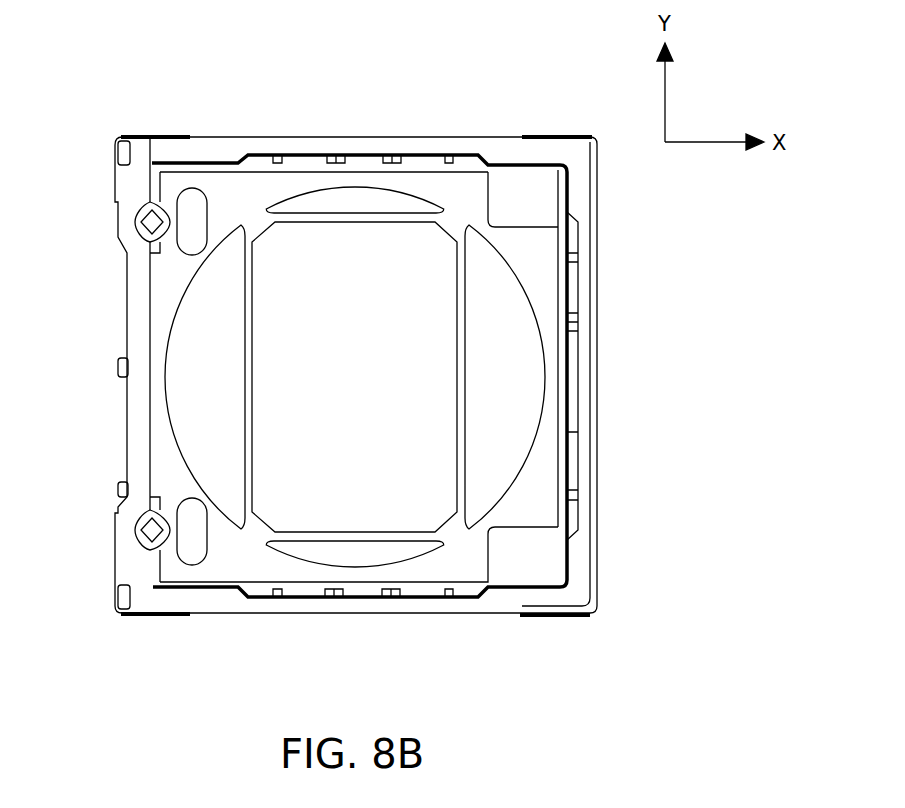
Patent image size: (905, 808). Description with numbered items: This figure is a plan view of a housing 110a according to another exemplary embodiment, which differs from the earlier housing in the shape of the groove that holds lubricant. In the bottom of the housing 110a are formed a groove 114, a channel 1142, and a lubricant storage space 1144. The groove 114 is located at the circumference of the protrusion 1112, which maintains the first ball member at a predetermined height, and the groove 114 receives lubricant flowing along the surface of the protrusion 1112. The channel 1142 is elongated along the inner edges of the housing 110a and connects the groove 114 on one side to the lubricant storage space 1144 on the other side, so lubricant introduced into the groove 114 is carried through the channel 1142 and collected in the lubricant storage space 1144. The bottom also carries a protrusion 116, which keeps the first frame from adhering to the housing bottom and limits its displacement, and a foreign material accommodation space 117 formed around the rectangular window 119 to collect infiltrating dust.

The housing 110a is at (372, 155).
The groove 114 is at (161, 137).
The channel 1142 is at (468, 162).
The lubricant storage space 1144 is at (536, 183).
The protrusion 116 is at (191, 204).
The protrusion 1112 is at (150, 218).
The foreign material accommodation space 117 is at (212, 333).
The rectangular window 119 is at (398, 387).